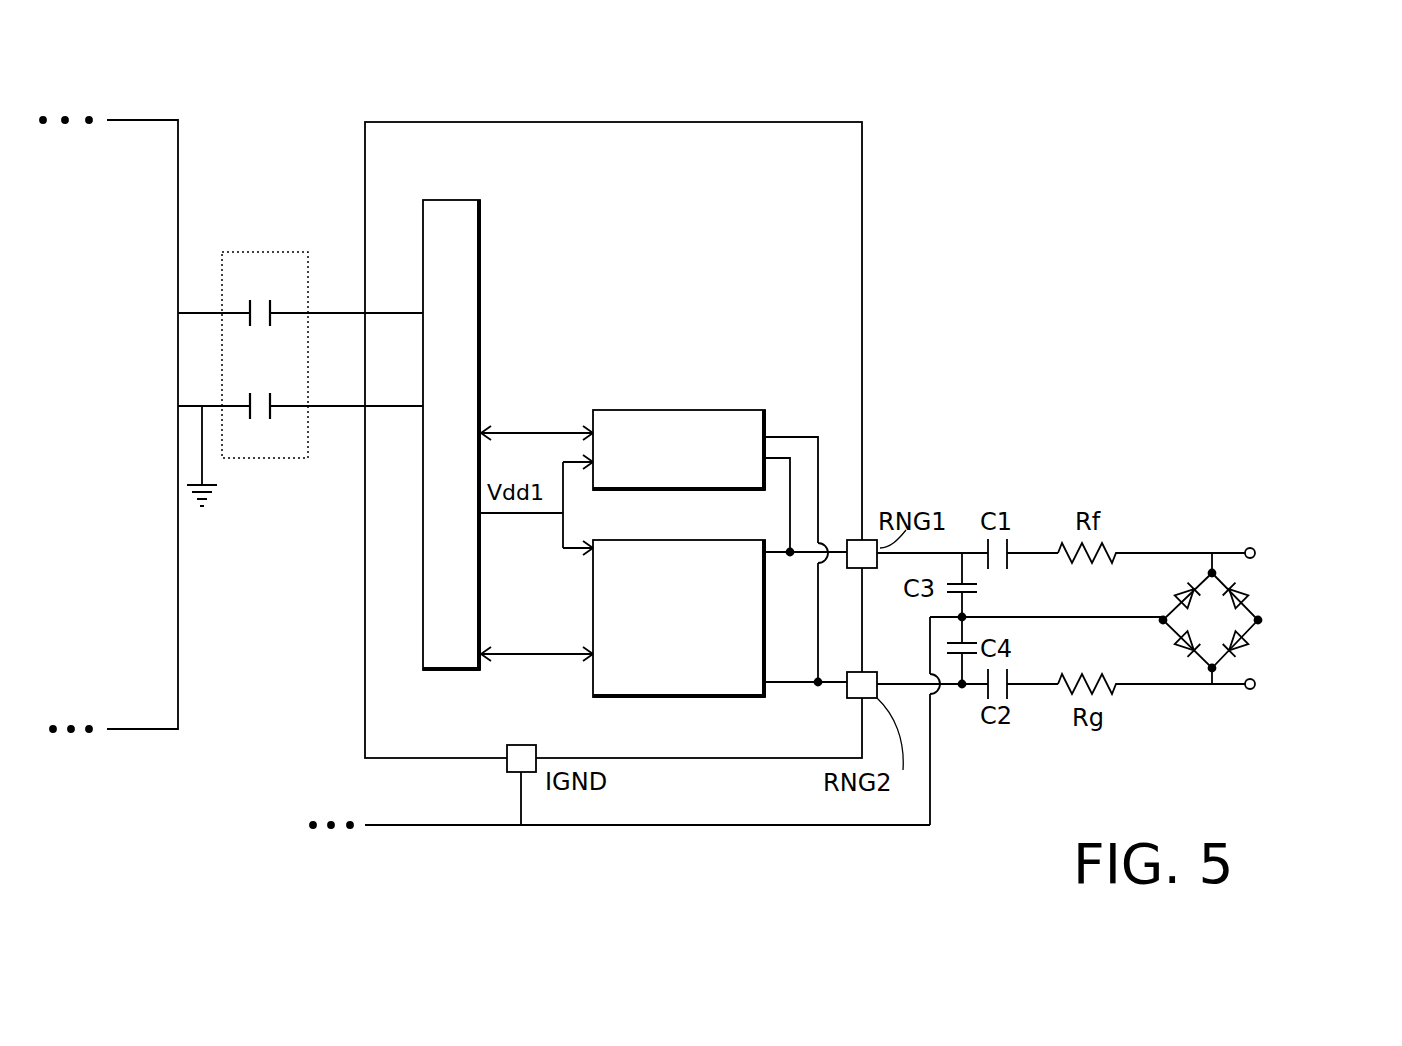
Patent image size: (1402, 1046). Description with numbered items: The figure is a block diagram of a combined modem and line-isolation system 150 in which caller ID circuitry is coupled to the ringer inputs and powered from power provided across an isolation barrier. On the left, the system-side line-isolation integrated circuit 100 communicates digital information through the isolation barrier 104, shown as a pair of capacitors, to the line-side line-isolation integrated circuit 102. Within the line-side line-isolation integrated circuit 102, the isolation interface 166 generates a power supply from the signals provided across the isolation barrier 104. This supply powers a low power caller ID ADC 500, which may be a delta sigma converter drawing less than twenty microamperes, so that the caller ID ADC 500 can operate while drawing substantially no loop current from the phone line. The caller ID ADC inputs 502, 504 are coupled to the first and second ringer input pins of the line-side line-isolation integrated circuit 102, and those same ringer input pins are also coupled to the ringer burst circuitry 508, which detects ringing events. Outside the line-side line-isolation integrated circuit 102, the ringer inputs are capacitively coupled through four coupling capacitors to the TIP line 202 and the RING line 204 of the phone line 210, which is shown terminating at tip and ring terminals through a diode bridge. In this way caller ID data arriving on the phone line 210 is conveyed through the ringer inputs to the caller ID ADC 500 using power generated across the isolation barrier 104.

The system-side line-isolation integrated circuit 100 is at (137, 120).
The line-side line-isolation integrated circuit 102 is at (862, 148).
The isolation barrier 104 is at (250, 252).
The combined modem and line-isolation system 150 is at (279, 775).
The isolation interface 166 is at (450, 200).
The TIP line 202 is at (1222, 553).
The RING line 204 is at (1230, 686).
The phone line 210 is at (1304, 557).
The caller ID ADC 500 is at (640, 410).
The caller ID ADC input 502 is at (792, 436).
The caller ID ADC input 504 is at (790, 515).
The ringer burst circuitry 508 is at (712, 697).